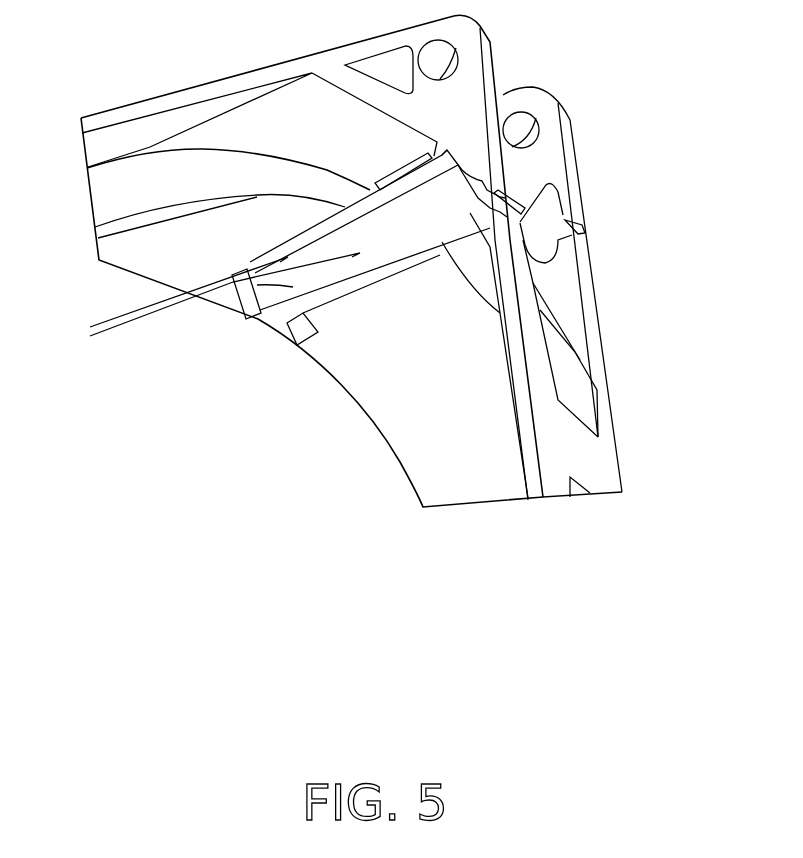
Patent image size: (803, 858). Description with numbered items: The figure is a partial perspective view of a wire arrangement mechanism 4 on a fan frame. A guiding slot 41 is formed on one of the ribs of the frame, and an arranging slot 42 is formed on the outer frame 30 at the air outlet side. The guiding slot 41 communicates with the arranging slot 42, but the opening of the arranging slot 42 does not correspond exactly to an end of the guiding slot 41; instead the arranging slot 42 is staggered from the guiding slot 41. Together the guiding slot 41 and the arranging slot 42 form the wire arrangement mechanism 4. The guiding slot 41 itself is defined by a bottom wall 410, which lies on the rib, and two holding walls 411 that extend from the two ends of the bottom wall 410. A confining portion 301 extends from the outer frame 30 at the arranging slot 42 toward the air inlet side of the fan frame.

The outer frame 30 is at (505, 150).
The confining portion 301 is at (522, 203).
The wire arrangement mechanism 4 is at (704, 210).
The guiding slot 41 is at (374, 229).
The arranging slot 42 is at (515, 222).
The bottom wall 410 is at (245, 312).
The holding walls 411 is at (194, 302).